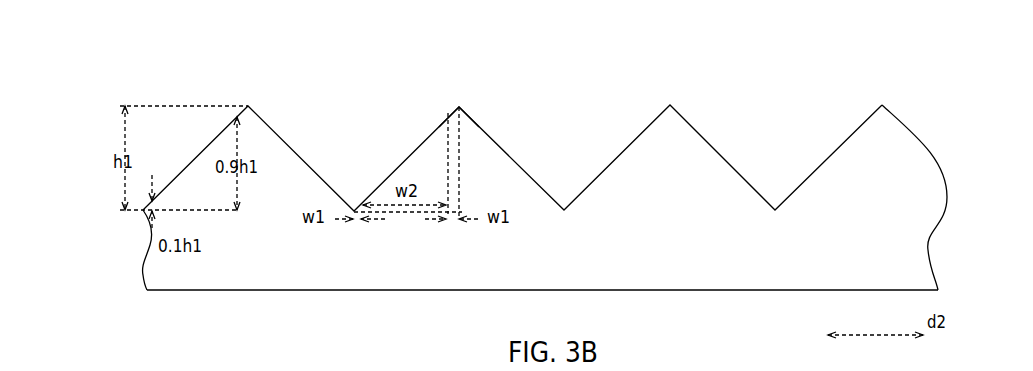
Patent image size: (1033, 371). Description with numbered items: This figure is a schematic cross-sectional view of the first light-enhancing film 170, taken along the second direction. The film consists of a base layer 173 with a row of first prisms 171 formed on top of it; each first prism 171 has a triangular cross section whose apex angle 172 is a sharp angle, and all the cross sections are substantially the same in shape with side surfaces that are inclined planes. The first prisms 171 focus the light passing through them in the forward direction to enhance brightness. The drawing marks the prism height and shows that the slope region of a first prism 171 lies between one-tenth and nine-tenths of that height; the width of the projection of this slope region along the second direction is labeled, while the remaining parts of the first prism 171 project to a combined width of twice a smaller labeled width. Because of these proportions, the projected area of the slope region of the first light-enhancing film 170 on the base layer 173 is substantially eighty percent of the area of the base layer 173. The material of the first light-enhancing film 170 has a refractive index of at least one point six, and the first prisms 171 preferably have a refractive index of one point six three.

The first light-enhancing film 170 is at (72, 52).
The first prisms 171 is at (110, 105).
The apex angle 172 is at (459, 107).
The base layer 173 is at (108, 212).